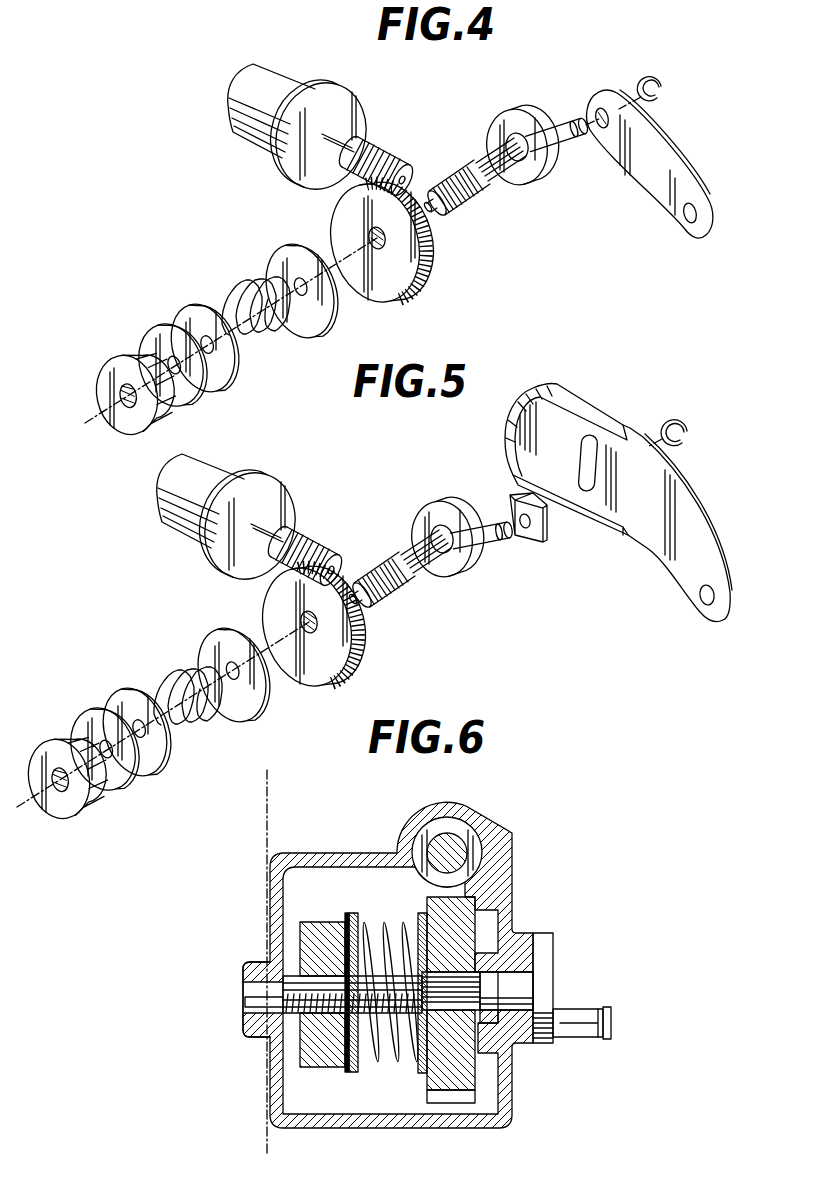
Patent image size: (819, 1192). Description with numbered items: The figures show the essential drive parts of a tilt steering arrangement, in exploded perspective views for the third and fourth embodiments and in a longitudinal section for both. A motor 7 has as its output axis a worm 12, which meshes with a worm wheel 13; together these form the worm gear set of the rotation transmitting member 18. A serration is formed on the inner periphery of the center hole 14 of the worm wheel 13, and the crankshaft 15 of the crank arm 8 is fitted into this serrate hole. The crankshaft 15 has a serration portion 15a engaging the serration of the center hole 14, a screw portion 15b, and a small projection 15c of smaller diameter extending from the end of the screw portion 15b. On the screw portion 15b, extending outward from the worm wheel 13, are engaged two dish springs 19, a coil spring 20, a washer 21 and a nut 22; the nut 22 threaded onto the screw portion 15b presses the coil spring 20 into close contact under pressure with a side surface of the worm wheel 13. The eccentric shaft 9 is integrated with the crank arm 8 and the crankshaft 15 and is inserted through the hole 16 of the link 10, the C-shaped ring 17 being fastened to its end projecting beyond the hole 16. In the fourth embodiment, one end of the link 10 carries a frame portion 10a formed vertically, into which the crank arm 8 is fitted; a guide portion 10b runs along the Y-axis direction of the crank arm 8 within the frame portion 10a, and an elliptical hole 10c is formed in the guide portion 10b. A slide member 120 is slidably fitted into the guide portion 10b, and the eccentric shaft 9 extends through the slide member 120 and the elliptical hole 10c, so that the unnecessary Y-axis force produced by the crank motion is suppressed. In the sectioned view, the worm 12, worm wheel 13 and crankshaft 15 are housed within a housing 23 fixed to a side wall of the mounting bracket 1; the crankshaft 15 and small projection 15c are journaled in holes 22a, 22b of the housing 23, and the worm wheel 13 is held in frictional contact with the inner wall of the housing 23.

In FIG. 6, the mounting bracket 1 is at (267, 800).
In FIG. 4, the motor 7 is at (293, 83).
In FIG. 5, the motor 7 is at (233, 513).
In FIG. 4, the crank arm 8 is at (512, 108).
In FIG. 5, the crank arm 8 is at (448, 525).
In FIG. 6, the crank arm 8 is at (540, 944).
In FIG. 4, the eccentric shaft 9 is at (566, 140).
In FIG. 5, the eccentric shaft 9 is at (492, 556).
In FIG. 6, the eccentric shaft 9 is at (577, 1031).
In FIG. 4, the link 10 is at (638, 144).
In FIG. 5, the link 10 is at (587, 491).
In FIG. 5, the frame portion 10a is at (515, 446).
In FIG. 5, the guide portion 10b is at (570, 428).
In FIG. 5, the elliptical hole 10c is at (597, 444).
In FIG. 4, the worm 12 is at (347, 190).
In FIG. 5, the worm 12 is at (269, 559).
In FIG. 6, the worm 12 is at (438, 842).
In FIG. 4, the worm wheel 13 is at (356, 254).
In FIG. 5, the worm wheel 13 is at (284, 634).
In FIG. 6, the worm wheel 13 is at (474, 1100).
In FIG. 4, the center hole 14 is at (377, 252).
In FIG. 5, the center hole 14 is at (298, 662).
In FIG. 4, the crankshaft 15 is at (475, 174).
In FIG. 5, the crankshaft 15 is at (395, 560).
In FIG. 6, the crankshaft 15 is at (402, 974).
In FIG. 4, the serration portion 15a is at (487, 158).
In FIG. 5, the serration portion 15a is at (393, 548).
In FIG. 6, the serration portion 15a is at (458, 978).
In FIG. 4, the screw portion 15b is at (476, 198).
In FIG. 5, the screw portion 15b is at (401, 588).
In FIG. 6, the screw portion 15b is at (317, 972).
In FIG. 4, the small projection 15c is at (440, 212).
In FIG. 5, the small projection 15c is at (380, 615).
In FIG. 6, the small projection 15c is at (270, 1000).
In FIG. 4, the hole 16 is at (598, 110).
In FIG. 4, the C-shaped ring 17 is at (640, 76).
In FIG. 5, the C-shaped ring 17 is at (668, 413).
In FIG. 4, the rotation transmitting member 18 is at (268, 190).
In FIG. 5, the rotation transmitting member 18 is at (194, 572).
In FIG. 4, the dish spring 19 is at (270, 258).
In FIG. 5, the dish spring 19 is at (182, 702).
In FIG. 6, the dish spring 19 is at (358, 1070).
In FIG. 4, the coil spring 20 is at (228, 283).
In FIG. 5, the coil spring 20 is at (170, 686).
In FIG. 6, the coil spring 20 is at (387, 923).
In FIG. 4, the washer 21 is at (155, 332).
In FIG. 5, the washer 21 is at (98, 740).
In FIG. 6, the washer 21 is at (352, 1070).
In FIG. 4, the nut 22 is at (120, 358).
In FIG. 5, the nut 22 is at (65, 762).
In FIG. 6, the nut 22 is at (387, 1007).
In FIG. 6, the hole 22a is at (517, 1010).
In FIG. 6, the hole 22b is at (253, 982).
In FIG. 6, the housing 23 is at (341, 857).
In FIG. 5, the slide member 120 is at (543, 543).